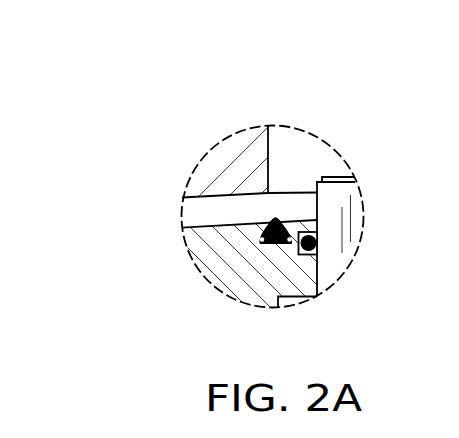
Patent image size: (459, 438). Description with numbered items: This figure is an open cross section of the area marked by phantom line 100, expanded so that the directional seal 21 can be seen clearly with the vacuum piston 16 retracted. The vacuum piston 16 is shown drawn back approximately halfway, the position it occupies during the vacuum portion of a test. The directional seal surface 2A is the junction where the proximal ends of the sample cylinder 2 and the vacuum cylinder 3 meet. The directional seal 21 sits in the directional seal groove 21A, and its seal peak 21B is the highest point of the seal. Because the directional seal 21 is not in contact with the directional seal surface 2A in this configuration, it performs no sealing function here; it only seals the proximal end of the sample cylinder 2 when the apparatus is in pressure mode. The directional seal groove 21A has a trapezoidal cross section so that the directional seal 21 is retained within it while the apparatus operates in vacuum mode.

The phantom line 100 is at (200, 143).
The directional seal surface 2A is at (264, 190).
The sample cylinder 2 is at (285, 152).
The vacuum cylinder 3 is at (203, 213).
The vacuum piston 16 is at (266, 270).
The directional seal groove 21A is at (260, 243).
The seal peak 21B is at (276, 217).
The directional seal 21 is at (288, 221).